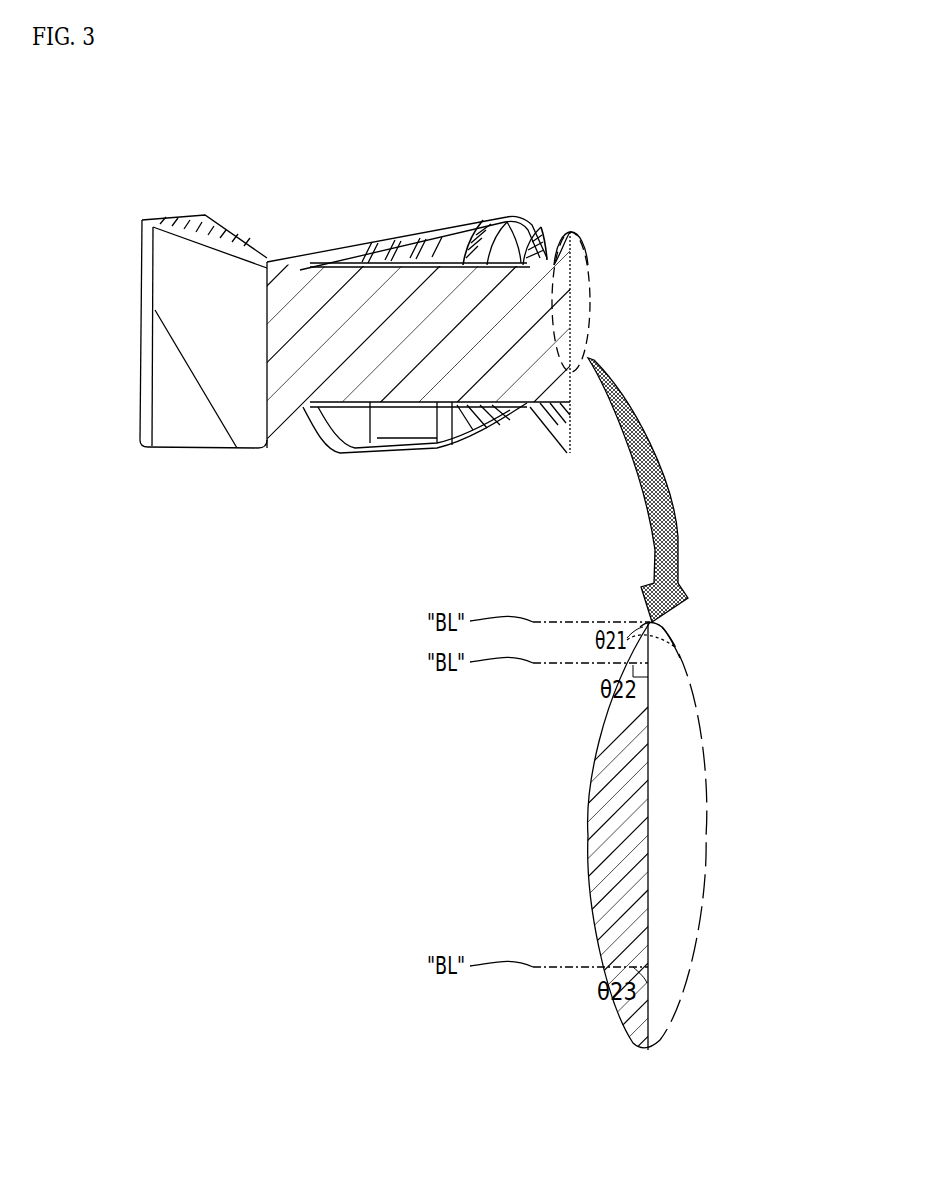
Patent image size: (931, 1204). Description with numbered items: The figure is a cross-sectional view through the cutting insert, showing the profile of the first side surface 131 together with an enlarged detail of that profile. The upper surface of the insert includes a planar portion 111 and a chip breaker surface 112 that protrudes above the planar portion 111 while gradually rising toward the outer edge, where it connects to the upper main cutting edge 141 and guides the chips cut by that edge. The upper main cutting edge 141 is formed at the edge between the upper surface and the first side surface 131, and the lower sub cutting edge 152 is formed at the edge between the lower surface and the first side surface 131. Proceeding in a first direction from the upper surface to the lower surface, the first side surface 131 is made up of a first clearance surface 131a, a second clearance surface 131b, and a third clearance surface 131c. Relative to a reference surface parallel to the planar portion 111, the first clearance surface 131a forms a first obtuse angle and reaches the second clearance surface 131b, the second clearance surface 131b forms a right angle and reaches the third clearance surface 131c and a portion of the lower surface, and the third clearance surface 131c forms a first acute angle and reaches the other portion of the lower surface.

The planar portion 111 is at (483, 220).
The chip breaker surface 112 is at (547, 235).
The first side surface 131 is at (730, 282).
The first clearance surface 131a is at (173, 236).
The second clearance surface 131b is at (183, 303).
The third clearance surface 131c is at (185, 410).
The upper main cutting edge 141 is at (253, 247).
The lower sub cutting edge 152 is at (222, 450).